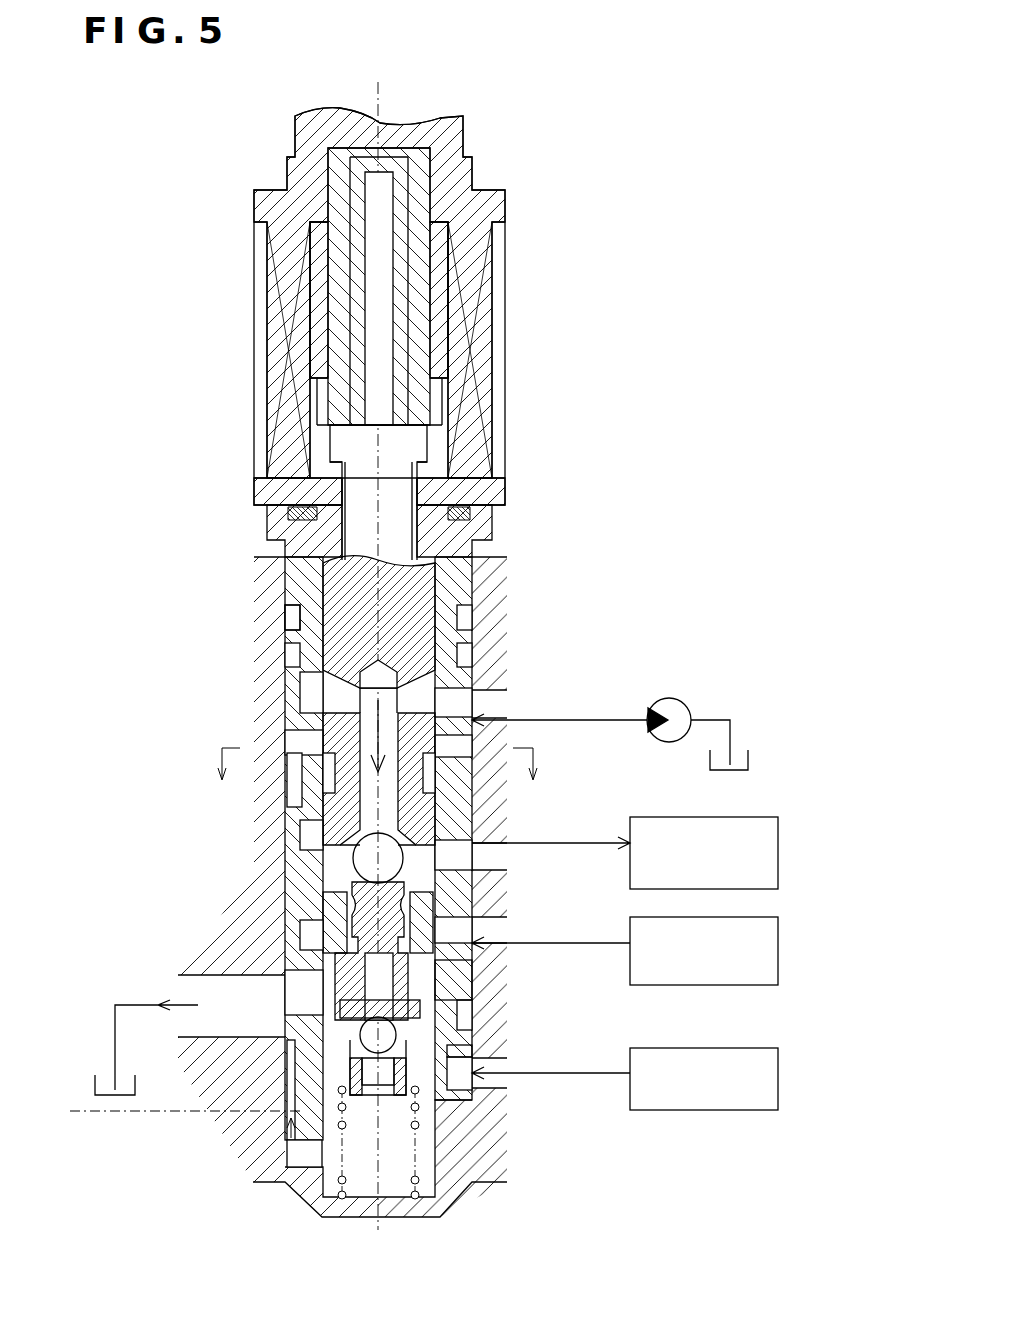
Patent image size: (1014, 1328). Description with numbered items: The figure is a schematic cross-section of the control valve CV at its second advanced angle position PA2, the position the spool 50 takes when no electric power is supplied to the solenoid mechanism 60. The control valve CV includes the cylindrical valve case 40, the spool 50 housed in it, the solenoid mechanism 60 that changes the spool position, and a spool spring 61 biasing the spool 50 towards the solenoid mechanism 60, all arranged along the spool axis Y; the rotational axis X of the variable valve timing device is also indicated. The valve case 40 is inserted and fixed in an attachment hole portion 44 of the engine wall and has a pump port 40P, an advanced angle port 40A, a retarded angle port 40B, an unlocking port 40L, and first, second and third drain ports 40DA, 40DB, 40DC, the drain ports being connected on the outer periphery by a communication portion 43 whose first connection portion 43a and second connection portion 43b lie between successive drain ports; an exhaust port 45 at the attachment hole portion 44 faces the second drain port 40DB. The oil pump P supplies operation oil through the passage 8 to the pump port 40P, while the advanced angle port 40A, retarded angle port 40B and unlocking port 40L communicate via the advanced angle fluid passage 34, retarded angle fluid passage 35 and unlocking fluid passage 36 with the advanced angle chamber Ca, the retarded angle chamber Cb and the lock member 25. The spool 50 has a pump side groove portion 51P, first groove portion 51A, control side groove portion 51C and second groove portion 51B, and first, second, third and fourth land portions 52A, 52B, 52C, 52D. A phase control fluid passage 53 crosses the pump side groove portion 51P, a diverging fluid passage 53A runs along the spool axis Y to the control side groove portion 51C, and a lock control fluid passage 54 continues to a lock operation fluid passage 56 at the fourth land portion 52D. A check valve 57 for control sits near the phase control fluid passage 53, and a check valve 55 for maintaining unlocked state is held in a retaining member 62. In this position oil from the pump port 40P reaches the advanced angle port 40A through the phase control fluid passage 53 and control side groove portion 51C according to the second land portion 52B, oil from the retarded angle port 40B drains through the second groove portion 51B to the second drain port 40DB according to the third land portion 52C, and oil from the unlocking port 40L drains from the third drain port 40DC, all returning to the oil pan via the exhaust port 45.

The solenoid mechanism 60 is at (507, 325).
The control valve CV is at (168, 493).
The valve case 40 is at (285, 570).
The spool 50 is at (470, 572).
The phase control fluid passage 53 is at (300, 652).
The pump side groove portion 51P is at (322, 690).
The communication portion 43 is at (280, 708).
The first drain port 40DA is at (280, 748).
The diverging fluid passage 53A is at (300, 805).
The second land portion 52B is at (320, 833).
The control side groove portion 51C is at (335, 865).
The first connection portion 43a is at (285, 908).
The third land portion 52C is at (320, 938).
The second drain port 40DB is at (290, 994).
The exhaust port 45 is at (210, 1035).
The lock control fluid passage 54 is at (330, 1005).
The check valve for maintaining unlocked state 55 is at (345, 1045).
The second advanced angle position PA2 is at (161, 1112).
The second connection portion 43b is at (290, 1137).
The third drain port 40DC is at (300, 1162).
The spool spring 61 is at (322, 1202).
The lock operation fluid passage 56 is at (385, 1090).
The attachment hole portion 44 is at (456, 1152).
The unlocking port 40L is at (475, 1092).
The pump port 40P is at (466, 711).
The oil passage 8 is at (614, 718).
The oil pump P is at (670, 699).
The first land portion 52A is at (466, 745).
The first groove portion 51A is at (460, 797).
The advanced angle fluid passage 34 is at (597, 843).
The check valve for control 57 is at (440, 846).
The advanced angle port 40A is at (465, 865).
The retarded angle port 40B is at (466, 921).
The retarded angle fluid passage 35 is at (597, 943).
The retaining member 62 is at (452, 985).
The second groove portion 51B is at (440, 1040).
The fourth land portion 52D is at (470, 1055).
The unlocking fluid passage 36 is at (597, 1073).
The lock member 25 is at (778, 1073).
The advanced angle chamber Ca is at (778, 843).
The retarded angle chamber Cb is at (778, 943).
The rotational axis X is at (375, 764).
The spool axis Y is at (376, 645).